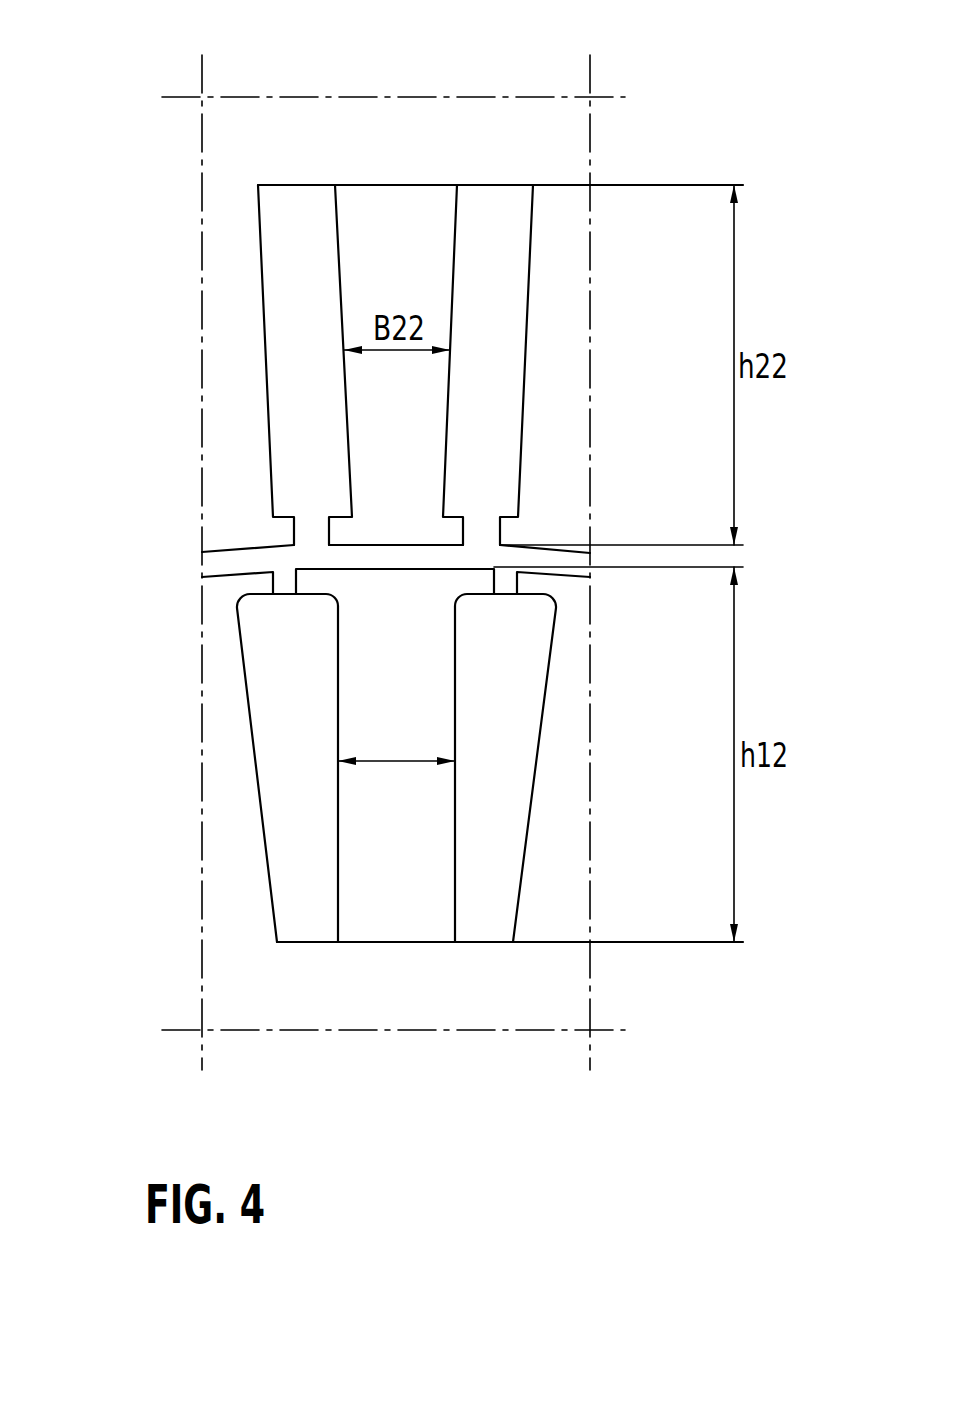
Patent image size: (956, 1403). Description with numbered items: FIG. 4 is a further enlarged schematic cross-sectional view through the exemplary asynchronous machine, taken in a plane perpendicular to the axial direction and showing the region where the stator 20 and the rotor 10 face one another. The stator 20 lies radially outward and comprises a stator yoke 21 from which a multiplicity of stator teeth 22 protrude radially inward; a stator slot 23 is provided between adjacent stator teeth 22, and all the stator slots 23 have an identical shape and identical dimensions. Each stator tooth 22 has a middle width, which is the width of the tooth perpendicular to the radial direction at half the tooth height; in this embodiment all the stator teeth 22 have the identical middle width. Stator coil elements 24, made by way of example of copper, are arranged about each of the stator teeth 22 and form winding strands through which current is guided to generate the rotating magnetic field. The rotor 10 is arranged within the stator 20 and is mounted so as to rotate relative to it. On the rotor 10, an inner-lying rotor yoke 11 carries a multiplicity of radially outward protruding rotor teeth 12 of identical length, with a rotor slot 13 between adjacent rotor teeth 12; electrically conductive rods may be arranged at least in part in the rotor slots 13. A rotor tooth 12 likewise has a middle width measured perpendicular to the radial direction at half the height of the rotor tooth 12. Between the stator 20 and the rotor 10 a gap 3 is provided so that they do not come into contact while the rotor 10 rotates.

The gap 3 is at (190, 572).
The rotor 10 is at (321, 1003).
The rotor yoke 11 is at (482, 995).
The rotor tooth 12 is at (394, 900).
The rotor slot 13 is at (283, 762).
The stator 20 is at (285, 130).
The stator yoke 21 is at (505, 130).
The stator tooth 22 is at (395, 225).
The stator slot 23 is at (282, 377).
The stator coil element 24 is at (280, 290).